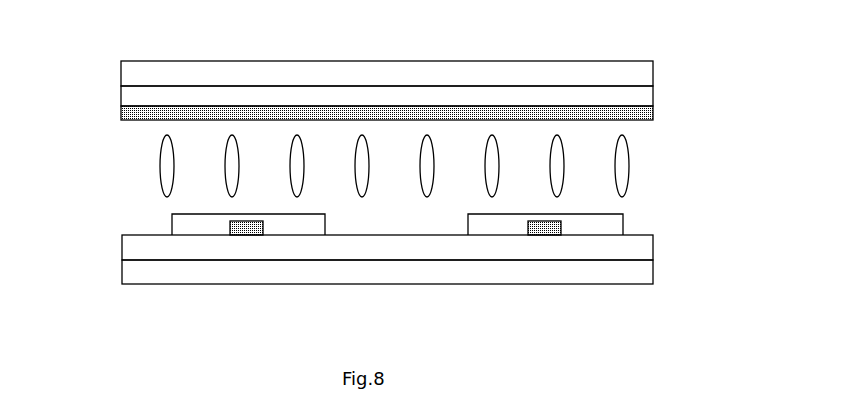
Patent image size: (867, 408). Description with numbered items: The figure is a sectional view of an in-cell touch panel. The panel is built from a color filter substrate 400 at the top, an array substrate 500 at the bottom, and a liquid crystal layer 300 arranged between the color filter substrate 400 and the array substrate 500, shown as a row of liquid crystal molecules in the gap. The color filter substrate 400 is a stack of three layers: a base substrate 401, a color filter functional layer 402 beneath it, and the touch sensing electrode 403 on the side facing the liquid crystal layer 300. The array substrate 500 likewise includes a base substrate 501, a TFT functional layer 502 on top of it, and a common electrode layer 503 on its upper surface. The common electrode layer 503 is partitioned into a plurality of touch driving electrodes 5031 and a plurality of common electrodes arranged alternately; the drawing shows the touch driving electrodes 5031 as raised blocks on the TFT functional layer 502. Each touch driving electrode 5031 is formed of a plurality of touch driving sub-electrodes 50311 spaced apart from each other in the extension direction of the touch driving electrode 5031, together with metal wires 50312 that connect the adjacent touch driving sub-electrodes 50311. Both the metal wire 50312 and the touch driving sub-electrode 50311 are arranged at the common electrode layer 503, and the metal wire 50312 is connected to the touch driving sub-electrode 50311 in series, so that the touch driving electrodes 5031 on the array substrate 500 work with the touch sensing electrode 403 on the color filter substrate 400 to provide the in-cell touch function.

The color filter substrate 400 is at (390, 79).
The base substrate 401 is at (653, 72).
The color filter functional layer 402 is at (653, 97).
The touch sensing electrode 403 is at (656, 114).
The liquid crystal layer 300 is at (639, 177).
The array substrate 500 is at (390, 259).
The base substrate 501 is at (653, 267).
The TFT functional layer 502 is at (653, 247).
The common electrode layer 503 is at (386, 259).
The touch driving electrode 5031 is at (232, 259).
The touch driving sub-electrode 50311 is at (315, 223).
The metal wire 50312 is at (242, 235).